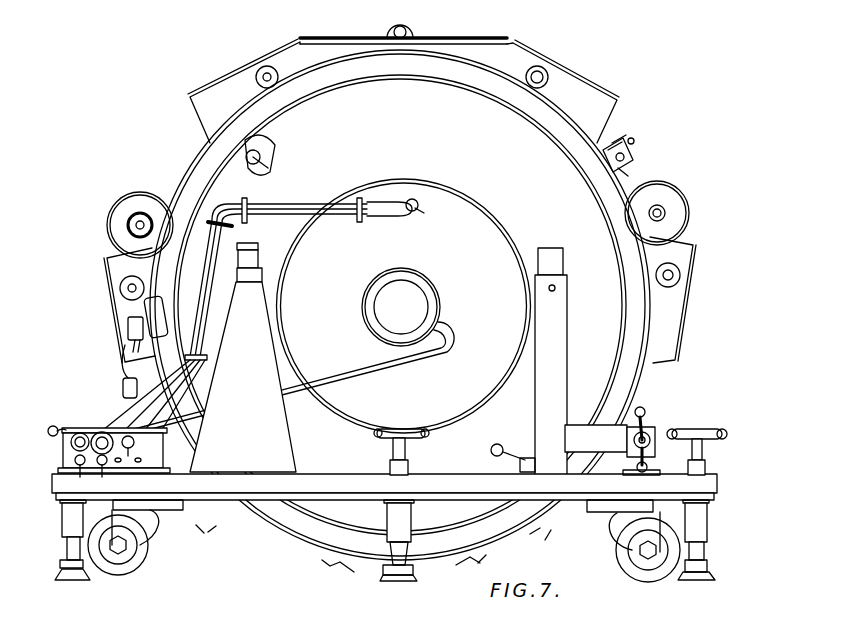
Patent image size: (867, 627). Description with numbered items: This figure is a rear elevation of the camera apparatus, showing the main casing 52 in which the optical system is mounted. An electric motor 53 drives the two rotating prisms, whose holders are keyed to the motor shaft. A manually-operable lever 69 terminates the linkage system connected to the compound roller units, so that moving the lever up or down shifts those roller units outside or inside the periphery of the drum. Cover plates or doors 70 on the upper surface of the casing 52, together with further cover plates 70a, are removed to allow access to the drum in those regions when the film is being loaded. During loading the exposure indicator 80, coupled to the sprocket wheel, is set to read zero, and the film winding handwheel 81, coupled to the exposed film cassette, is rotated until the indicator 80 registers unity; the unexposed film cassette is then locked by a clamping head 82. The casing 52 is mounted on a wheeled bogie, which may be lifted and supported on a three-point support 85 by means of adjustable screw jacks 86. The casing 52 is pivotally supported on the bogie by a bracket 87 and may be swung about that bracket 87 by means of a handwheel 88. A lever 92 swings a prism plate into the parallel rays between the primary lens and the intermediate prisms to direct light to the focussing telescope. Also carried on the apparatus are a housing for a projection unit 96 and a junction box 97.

The main casing 52 is at (628, 373).
The electric motor 53 is at (407, 288).
The manually-operable lever 69 is at (268, 147).
The cover plates or doors 70 is at (260, 60).
The cover plates 70a is at (115, 327).
The exposure indicator 80 is at (147, 307).
The film winding handwheel 81 is at (137, 220).
The clamping head 82 is at (662, 213).
The three-point support 85 is at (72, 579).
The adjustable screw jacks 86 is at (52, 427).
The bracket 87 is at (248, 465).
The handwheel 88 is at (645, 410).
The lever 92 is at (615, 143).
The housing for a projection unit 96 is at (188, 467).
The junction box 97 is at (67, 450).